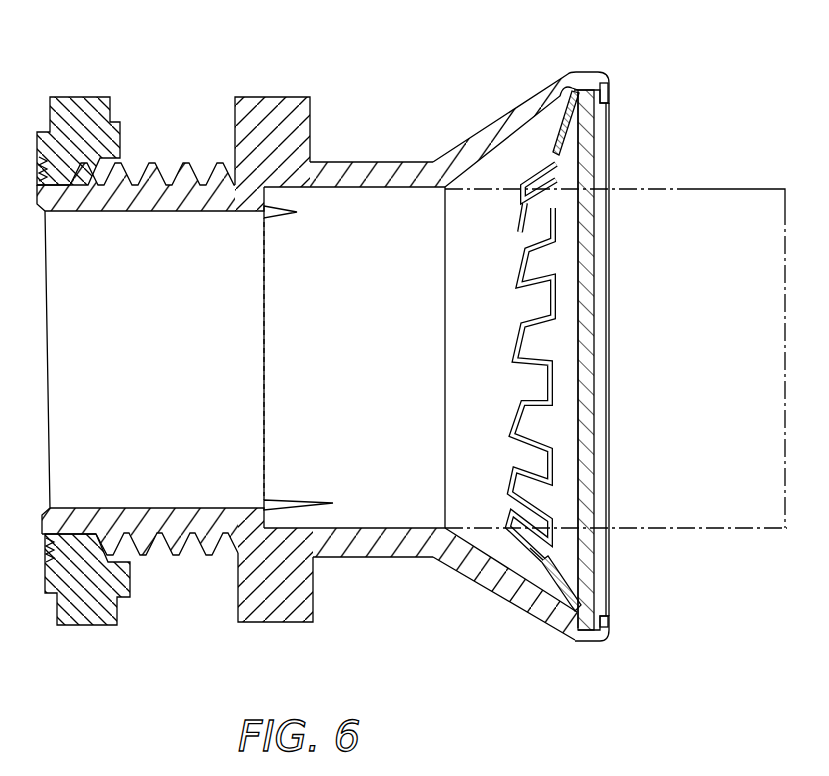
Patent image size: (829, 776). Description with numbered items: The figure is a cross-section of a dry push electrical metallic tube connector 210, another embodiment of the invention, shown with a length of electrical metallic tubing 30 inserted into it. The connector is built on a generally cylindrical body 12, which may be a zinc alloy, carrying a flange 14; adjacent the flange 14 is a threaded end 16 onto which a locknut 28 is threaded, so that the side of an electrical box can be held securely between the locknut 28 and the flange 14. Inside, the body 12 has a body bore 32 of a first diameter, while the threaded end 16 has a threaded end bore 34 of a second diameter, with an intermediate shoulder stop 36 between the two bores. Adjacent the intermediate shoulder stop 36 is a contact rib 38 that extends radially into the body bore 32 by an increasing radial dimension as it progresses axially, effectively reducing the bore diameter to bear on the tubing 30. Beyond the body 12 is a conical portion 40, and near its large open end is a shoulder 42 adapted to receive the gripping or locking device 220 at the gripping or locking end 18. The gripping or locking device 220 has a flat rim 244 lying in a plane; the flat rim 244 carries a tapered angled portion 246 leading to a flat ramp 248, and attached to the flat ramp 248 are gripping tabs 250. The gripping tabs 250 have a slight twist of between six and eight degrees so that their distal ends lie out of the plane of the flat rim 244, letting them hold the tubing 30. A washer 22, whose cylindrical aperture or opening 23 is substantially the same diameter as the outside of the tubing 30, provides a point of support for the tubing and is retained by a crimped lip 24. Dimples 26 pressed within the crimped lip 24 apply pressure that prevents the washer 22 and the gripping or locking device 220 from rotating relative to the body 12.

The body 12 is at (241, 363).
The flange 14 is at (272, 106).
The threaded end 16 is at (235, 587).
The gripping or locking end 18 is at (482, 596).
The washer 22 is at (625, 360).
The cylindrical aperture or opening 23 is at (584, 193).
The crimped lip 24 is at (612, 590).
The dimples 26 is at (607, 83).
The locknut 28 is at (78, 111).
The electrical metallic tubing 30 is at (665, 190).
The body bore 32 is at (354, 357).
The threaded end bore 34 is at (152, 220).
The intermediate shoulder stop 36 is at (248, 249).
The contact rib 38 is at (305, 484).
The conical portion 40 is at (521, 116).
The shoulder 42 is at (478, 165).
The dry push electrical metallic tube connector 210 is at (437, 68).
The gripping or locking device 220 is at (537, 156).
The flat rim 244 is at (547, 653).
The tapered angled portion 246 is at (610, 583).
The flat ramp 248 is at (603, 523).
The gripping tabs 250 is at (518, 410).